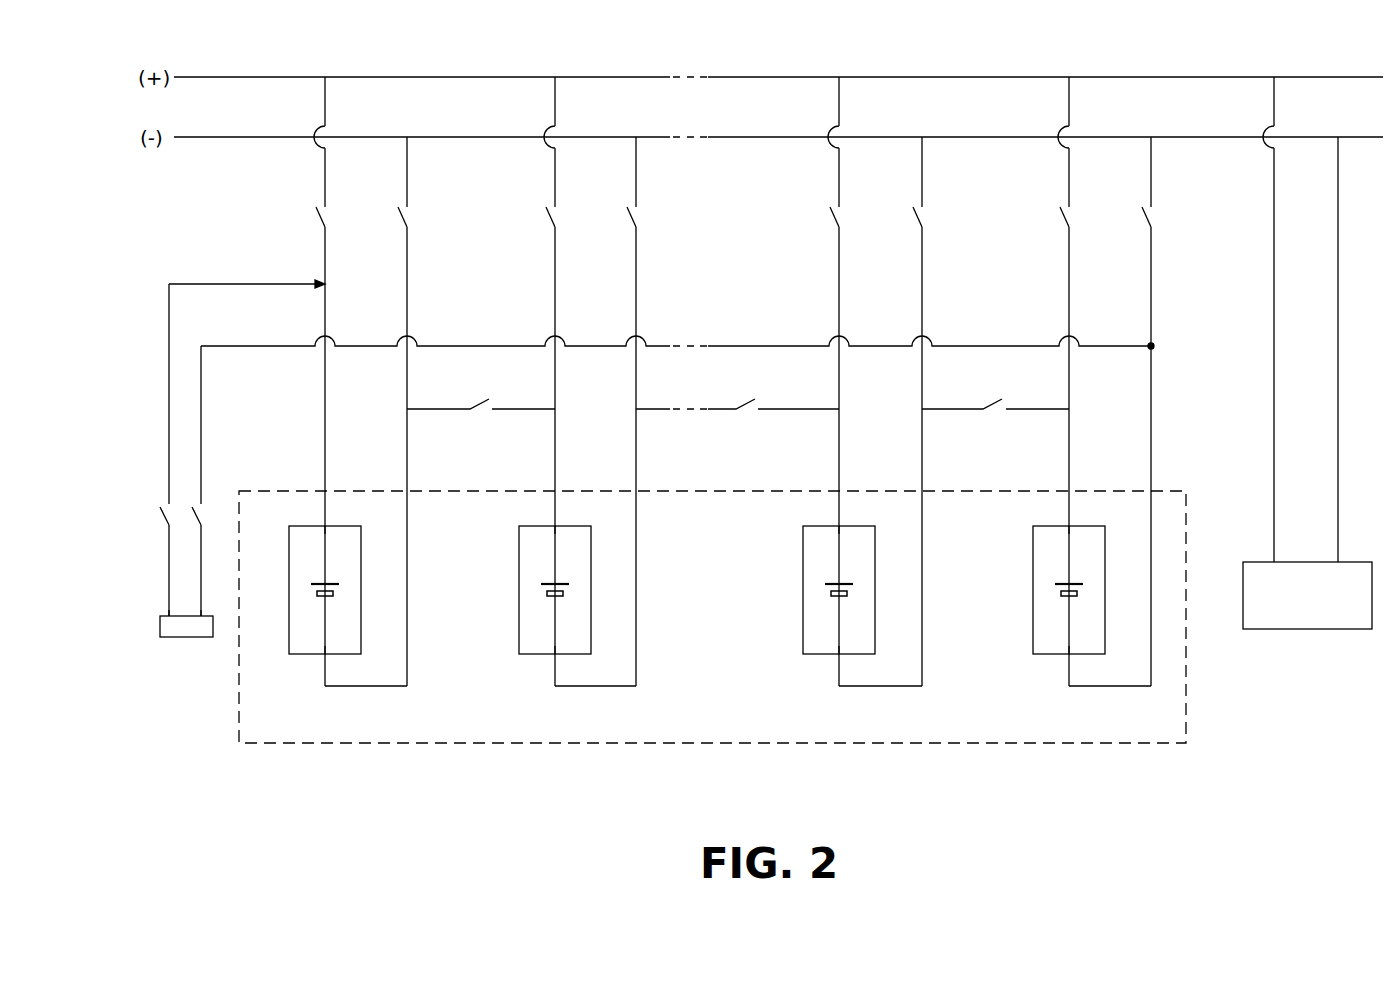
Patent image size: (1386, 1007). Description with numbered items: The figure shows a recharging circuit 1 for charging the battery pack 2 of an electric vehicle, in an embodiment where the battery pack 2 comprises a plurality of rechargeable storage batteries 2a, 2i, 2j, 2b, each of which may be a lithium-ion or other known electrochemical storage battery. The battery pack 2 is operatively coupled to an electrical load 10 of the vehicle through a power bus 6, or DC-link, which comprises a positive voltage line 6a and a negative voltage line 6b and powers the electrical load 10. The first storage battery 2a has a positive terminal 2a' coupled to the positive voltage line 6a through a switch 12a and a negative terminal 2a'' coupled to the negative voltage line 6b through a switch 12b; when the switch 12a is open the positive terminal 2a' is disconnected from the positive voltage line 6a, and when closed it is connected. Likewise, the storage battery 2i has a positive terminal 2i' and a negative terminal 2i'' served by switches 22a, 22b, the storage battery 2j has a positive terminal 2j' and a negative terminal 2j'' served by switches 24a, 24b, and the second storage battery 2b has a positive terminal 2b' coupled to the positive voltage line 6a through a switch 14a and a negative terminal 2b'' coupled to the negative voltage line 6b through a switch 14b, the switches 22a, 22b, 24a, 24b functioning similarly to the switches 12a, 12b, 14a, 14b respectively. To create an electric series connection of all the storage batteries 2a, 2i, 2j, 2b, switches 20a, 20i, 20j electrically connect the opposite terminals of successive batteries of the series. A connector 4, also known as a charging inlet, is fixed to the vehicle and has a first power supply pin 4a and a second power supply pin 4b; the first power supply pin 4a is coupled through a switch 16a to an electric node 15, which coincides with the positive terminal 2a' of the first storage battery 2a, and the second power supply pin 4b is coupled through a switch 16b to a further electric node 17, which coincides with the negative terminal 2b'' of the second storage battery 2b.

The recharging circuit 1 is at (166, 213).
The battery pack 2 is at (280, 746).
The first storage battery 2a is at (338, 589).
The positive terminal 2a' is at (354, 490).
The negative terminal 2a'' is at (365, 689).
The storage battery 2i is at (569, 589).
The positive terminal 2i' is at (584, 490).
The negative terminal 2i'' is at (593, 689).
The storage battery 2j is at (854, 589).
The positive terminal 2j' is at (866, 490).
The negative terminal 2j'' is at (877, 689).
The second storage battery 2b is at (1088, 589).
The positive terminal 2b' is at (1102, 490).
The negative terminal 2b'' is at (1111, 689).
The connector 4 is at (162, 616).
The first power supply pin 4a is at (167, 614).
The second power supply pin 4b is at (203, 615).
The power bus 6 is at (778, 104).
The positive voltage line 6a is at (228, 77).
The negative voltage line 6b is at (226, 144).
The electrical load 10 is at (1346, 614).
The switch 12a is at (317, 210).
The switch 12b is at (398, 210).
The switch 14a is at (1061, 213).
The switch 14b is at (1142, 212).
The electric node 15 is at (331, 286).
The switch 16a is at (162, 518).
The switch 16b is at (198, 520).
The electric node 17 is at (1151, 346).
The switch 20a is at (478, 401).
The switch 20i is at (741, 401).
The switch 20j is at (994, 402).
The switch 22a is at (547, 214).
The switch 22b is at (628, 214).
The switch 24a is at (831, 212).
The switch 24b is at (913, 212).